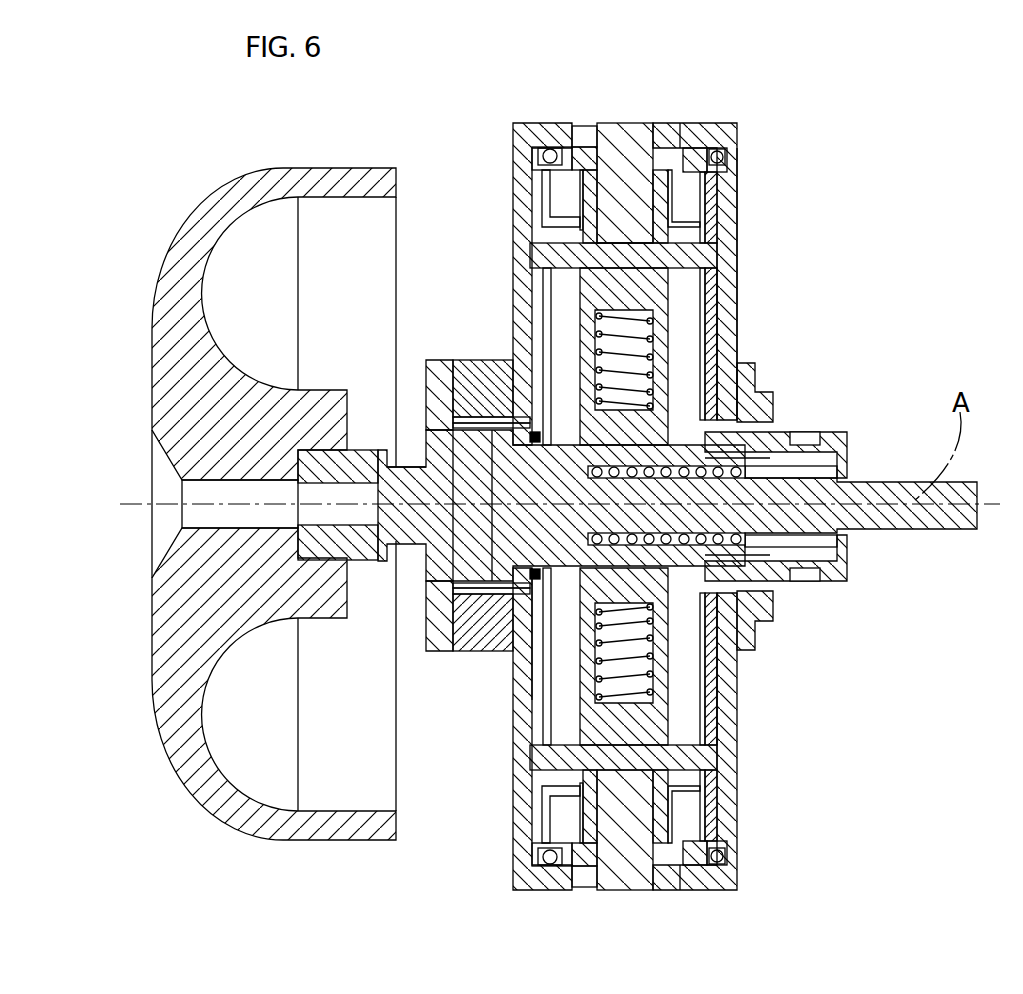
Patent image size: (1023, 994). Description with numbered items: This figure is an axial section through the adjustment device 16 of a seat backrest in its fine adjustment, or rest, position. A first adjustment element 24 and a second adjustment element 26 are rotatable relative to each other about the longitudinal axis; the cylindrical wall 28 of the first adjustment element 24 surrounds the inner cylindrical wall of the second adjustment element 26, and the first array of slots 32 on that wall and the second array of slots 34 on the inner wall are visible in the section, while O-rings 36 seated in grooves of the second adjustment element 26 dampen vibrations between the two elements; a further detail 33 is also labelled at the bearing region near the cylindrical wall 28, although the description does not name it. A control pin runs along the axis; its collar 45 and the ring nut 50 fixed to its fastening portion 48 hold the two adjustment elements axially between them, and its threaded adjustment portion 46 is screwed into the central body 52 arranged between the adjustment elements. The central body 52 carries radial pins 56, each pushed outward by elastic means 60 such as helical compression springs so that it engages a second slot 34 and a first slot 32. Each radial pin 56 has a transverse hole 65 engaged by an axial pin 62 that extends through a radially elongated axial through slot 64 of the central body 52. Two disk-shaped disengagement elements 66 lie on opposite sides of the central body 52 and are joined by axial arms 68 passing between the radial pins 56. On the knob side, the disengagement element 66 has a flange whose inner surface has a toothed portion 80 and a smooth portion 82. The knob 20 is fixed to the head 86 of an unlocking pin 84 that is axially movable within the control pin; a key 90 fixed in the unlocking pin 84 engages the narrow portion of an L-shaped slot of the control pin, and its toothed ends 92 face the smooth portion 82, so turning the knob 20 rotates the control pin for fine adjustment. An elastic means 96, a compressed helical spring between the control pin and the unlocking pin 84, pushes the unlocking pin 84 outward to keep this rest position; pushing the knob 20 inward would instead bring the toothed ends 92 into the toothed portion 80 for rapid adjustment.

The adjustment device 16 is at (894, 190).
The knob 20 is at (153, 269).
The first adjustment element 24 is at (710, 123).
The second adjustment element 26 is at (739, 210).
The cylindrical wall 28 is at (552, 123).
The first array of slots 32 is at (577, 132).
The bearing ball 33 is at (540, 152).
The second array of slots 34 is at (714, 190).
The O-rings 36 is at (727, 158).
The collar 45 is at (430, 612).
The threaded adjustment portion 46 is at (562, 566).
The fastening portion 48 is at (770, 578).
The ring nut 50 is at (765, 395).
The central body 52 is at (574, 803).
The radial pins 56 is at (622, 135).
The elastic means 60 is at (636, 345).
The axial pins 62 is at (700, 255).
The axial through slot 64 is at (597, 286).
The transverse holes 65 is at (634, 256).
The disengagement elements 66 is at (728, 330).
The axial arms 68 is at (702, 223).
The toothed portion 80 is at (565, 444).
The smooth portion 82 is at (497, 372).
The unlocking pin 84 is at (407, 464).
The head 86 is at (336, 575).
The key 90 is at (405, 466).
The toothed ends 92 is at (470, 358).
The elastic means 96 is at (785, 433).